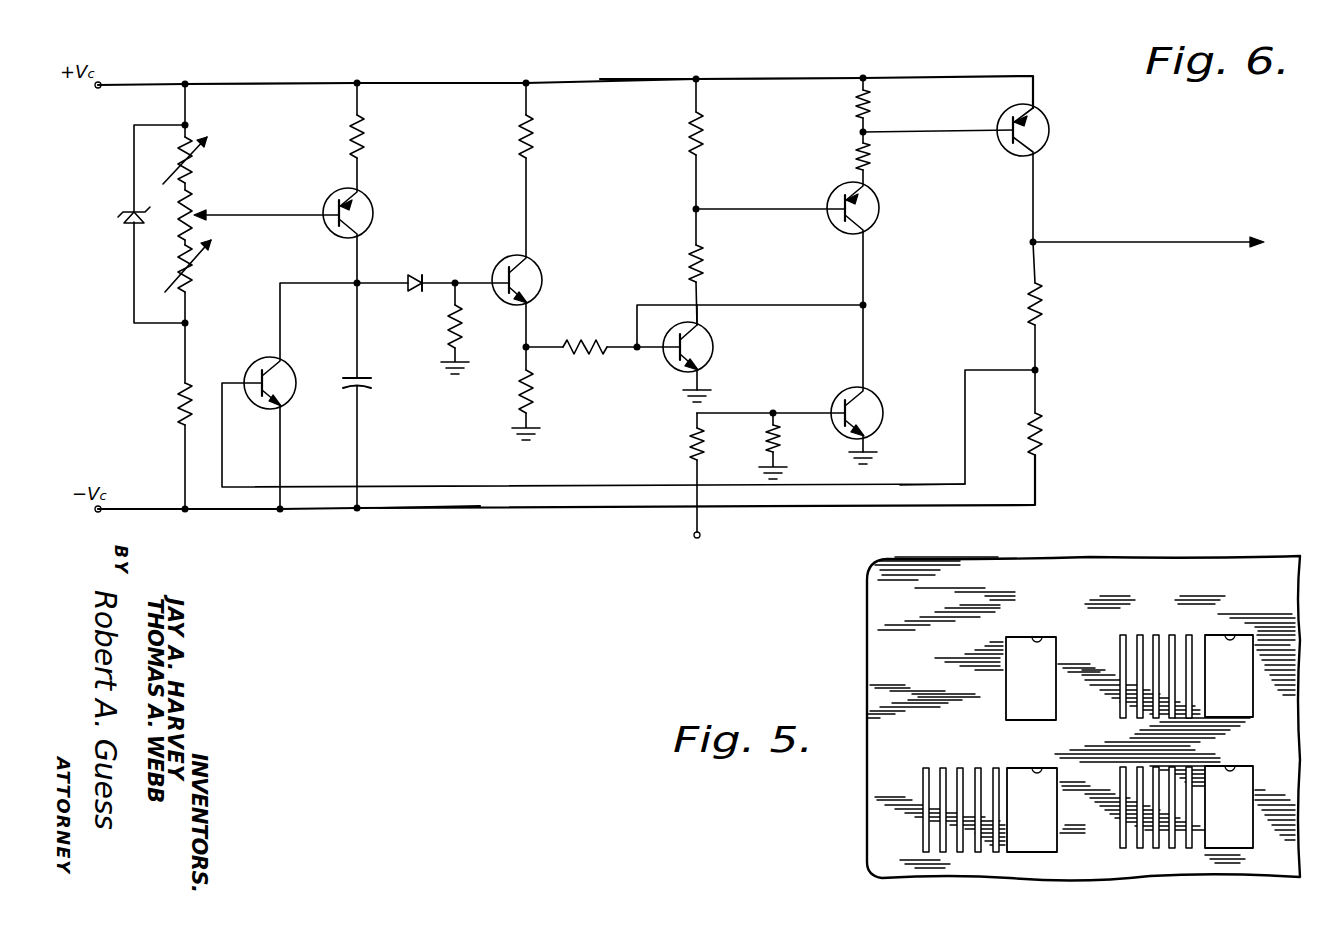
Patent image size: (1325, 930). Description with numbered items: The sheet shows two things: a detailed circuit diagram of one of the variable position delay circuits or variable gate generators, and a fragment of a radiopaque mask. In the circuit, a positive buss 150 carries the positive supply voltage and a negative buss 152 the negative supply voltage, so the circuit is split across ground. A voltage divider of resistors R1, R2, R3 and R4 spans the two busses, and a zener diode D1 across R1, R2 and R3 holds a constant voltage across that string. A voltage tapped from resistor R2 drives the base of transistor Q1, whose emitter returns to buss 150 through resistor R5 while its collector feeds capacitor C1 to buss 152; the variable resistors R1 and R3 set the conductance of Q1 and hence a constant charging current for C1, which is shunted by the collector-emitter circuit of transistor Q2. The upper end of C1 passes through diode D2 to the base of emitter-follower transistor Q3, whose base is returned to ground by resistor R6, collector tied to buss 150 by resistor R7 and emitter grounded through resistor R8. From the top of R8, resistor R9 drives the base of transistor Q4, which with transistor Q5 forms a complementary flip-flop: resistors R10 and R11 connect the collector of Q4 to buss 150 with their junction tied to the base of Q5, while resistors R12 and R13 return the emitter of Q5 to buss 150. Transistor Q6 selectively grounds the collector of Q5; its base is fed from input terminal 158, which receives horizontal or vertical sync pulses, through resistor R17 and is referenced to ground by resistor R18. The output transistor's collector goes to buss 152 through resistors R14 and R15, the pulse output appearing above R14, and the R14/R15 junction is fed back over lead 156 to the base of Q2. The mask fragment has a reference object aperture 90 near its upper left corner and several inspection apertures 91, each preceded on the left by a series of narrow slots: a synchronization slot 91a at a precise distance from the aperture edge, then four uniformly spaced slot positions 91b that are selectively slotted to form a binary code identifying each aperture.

In FIG. 6, the positive buss 150 is at (608, 80).
In FIG. 6, the negative buss 152 is at (436, 512).
In FIG. 6, the feedback lead 156 is at (905, 488).
In FIG. 6, the input terminal 158 is at (693, 540).
In FIG. 6, the variable resistor R1 is at (205, 155).
In FIG. 6, the resistor R2 is at (205, 205).
In FIG. 6, the variable resistor R3 is at (205, 278).
In FIG. 6, the resistor R4 is at (178, 405).
In FIG. 6, the resistor R5 is at (365, 137).
In FIG. 6, the resistor R6 is at (445, 318).
In FIG. 6, the resistor R7 is at (535, 130).
In FIG. 6, the resistor R8 is at (535, 385).
In FIG. 6, the resistor R9 is at (570, 340).
In FIG. 6, the resistor R10 is at (705, 255).
In FIG. 6, the resistor R11 is at (705, 135).
In FIG. 6, the resistor R12 is at (870, 160).
In FIG. 6, the resistor R13 is at (870, 105).
In FIG. 6, the resistor R14 is at (1045, 305).
In FIG. 6, the resistor R15 is at (1045, 436).
In FIG. 6, the resistor R17 is at (690, 430).
In FIG. 6, the resistor R18 is at (780, 440).
In FIG. 6, the capacitor C1 is at (368, 388).
In FIG. 6, the zener diode D1 is at (138, 224).
In FIG. 6, the diode D2 is at (418, 276).
In FIG. 6, the transistor Q1 is at (372, 206).
In FIG. 6, the transistor Q2 is at (285, 400).
In FIG. 6, the emitter-follower transistor Q3 is at (540, 265).
In FIG. 6, the transistor Q4 is at (713, 340).
In FIG. 6, the transistor Q5 is at (880, 216).
In FIG. 6, the transistor Q6 is at (1050, 126).
In FIG. 5, the reference object aperture 90 is at (1040, 637).
In FIG. 5, the inspection aperture 91 is at (1232, 635).
In FIG. 5, the synchronization slot 91a is at (1122, 645).
In FIG. 5, the slot position 91b is at (1141, 635).